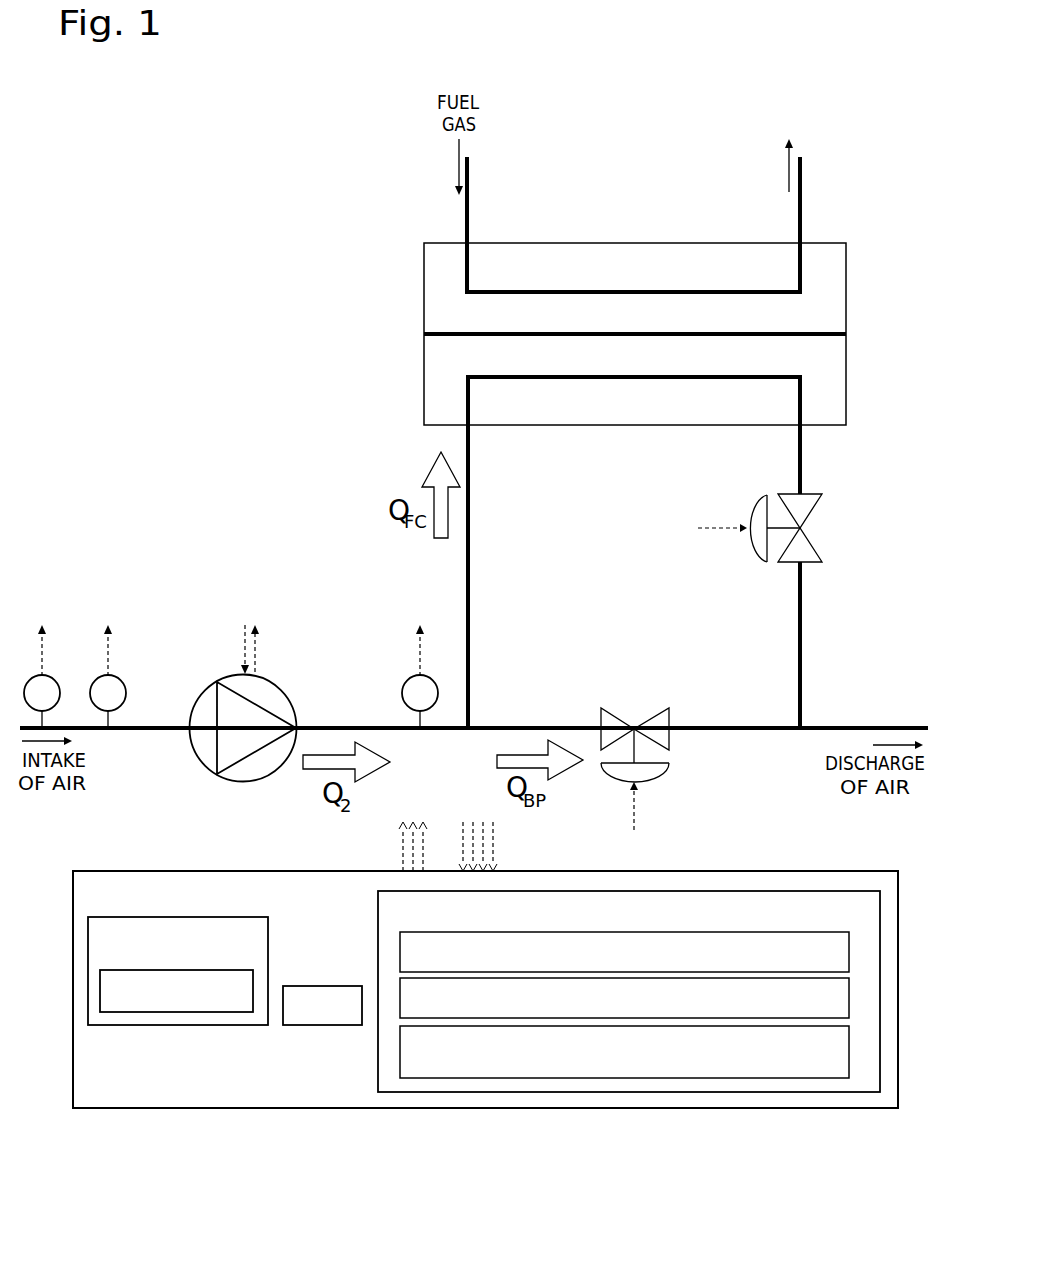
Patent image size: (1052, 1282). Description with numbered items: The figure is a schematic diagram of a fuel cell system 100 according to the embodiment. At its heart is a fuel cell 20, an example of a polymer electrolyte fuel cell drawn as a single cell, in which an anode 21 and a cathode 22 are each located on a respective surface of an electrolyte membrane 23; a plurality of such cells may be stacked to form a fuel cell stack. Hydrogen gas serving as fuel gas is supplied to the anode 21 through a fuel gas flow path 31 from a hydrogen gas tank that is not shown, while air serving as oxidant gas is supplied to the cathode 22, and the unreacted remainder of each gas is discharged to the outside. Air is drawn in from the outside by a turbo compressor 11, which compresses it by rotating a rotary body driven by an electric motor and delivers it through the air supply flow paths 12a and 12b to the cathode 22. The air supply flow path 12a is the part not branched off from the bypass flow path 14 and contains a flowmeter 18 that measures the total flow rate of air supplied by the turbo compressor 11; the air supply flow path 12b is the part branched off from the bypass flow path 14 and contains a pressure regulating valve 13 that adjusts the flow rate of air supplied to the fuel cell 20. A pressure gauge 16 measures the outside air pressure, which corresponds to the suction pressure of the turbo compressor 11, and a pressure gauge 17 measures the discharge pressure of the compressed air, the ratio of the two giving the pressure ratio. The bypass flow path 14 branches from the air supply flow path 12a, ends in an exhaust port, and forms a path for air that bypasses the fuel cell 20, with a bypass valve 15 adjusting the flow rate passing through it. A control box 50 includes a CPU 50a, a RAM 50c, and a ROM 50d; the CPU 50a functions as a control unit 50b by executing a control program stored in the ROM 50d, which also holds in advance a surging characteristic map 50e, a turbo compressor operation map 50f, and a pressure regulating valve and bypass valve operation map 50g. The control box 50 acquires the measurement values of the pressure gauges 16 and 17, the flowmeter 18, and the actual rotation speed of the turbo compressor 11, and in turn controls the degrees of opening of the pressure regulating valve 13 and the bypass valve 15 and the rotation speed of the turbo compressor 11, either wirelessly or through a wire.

The fuel cell system 100 is at (874, 136).
The fuel cell 20 is at (420, 264).
The anode 21 is at (447, 313).
The cathode 22 is at (447, 359).
The electrolyte membrane 23 is at (826, 333).
The fuel gas flow path 31 is at (800, 200).
The turbo compressor 11 is at (213, 683).
The air supply flow path 12a is at (360, 727).
The air supply flow path 12b is at (468, 562).
The pressure regulating valve 13 is at (822, 518).
The bypass flow path 14 is at (713, 732).
The bypass valve 15 is at (620, 718).
The pressure gauge 16 is at (35, 676).
The pressure gauge 17 is at (408, 682).
The flowmeter 18 is at (128, 688).
The control box 50 is at (157, 871).
The CPU 50a is at (129, 1025).
The control unit 50b is at (197, 1012).
The RAM 50c is at (315, 1025).
The ROM 50d is at (397, 1092).
The surging characteristic map 50e is at (767, 932).
The turbo compressor operation map 50f is at (400, 992).
The pressure regulating valve and bypass valve operation map 50g is at (783, 1078).